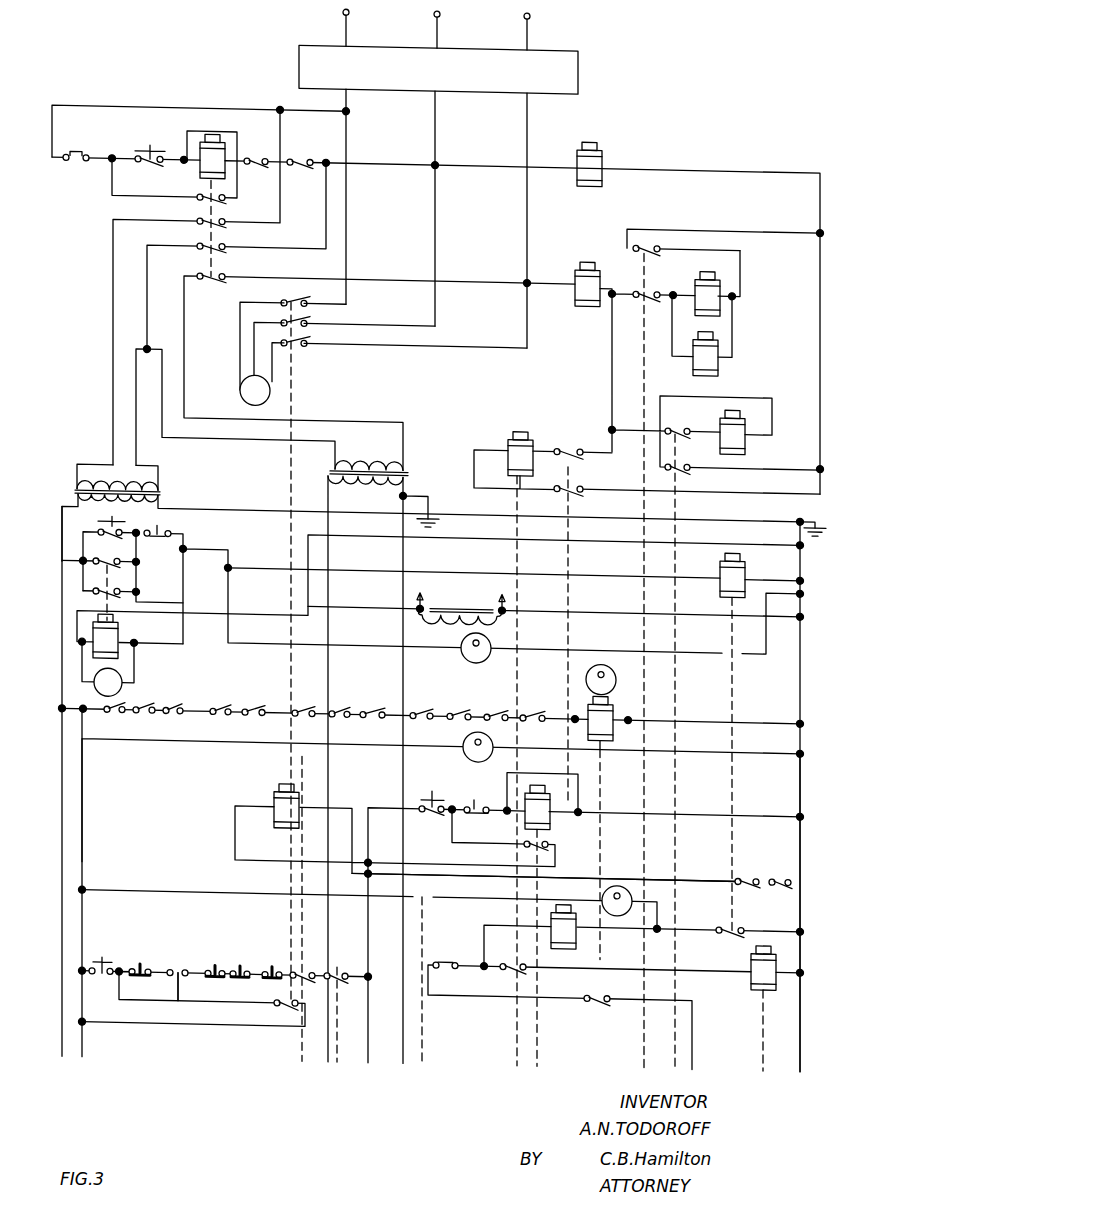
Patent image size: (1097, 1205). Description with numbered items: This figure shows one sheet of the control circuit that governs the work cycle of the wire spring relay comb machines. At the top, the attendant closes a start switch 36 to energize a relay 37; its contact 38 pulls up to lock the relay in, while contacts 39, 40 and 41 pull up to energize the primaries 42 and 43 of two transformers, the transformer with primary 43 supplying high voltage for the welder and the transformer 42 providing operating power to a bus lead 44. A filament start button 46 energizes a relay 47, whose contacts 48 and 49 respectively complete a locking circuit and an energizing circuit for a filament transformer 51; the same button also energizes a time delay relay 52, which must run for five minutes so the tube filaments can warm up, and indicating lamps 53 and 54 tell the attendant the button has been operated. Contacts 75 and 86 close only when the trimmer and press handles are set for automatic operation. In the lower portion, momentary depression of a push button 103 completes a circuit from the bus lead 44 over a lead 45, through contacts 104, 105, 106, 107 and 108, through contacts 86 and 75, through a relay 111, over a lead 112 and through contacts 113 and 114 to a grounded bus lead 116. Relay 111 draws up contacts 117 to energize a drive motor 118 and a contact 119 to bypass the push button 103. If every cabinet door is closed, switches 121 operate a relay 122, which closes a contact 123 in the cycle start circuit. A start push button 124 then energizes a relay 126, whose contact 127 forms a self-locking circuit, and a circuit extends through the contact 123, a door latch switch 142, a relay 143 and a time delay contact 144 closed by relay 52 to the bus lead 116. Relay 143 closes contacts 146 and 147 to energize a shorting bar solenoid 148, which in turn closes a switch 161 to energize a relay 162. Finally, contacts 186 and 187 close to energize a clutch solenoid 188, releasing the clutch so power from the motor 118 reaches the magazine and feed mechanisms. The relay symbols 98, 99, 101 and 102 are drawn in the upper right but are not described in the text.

The start switch 36 is at (152, 162).
The relay 37 is at (214, 150).
The relay contact 38 is at (224, 200).
The relay contact 39 is at (226, 225).
The relay contact 40 is at (226, 250).
The relay contact 41 is at (226, 280).
The transformer primary 42 is at (118, 480).
The transformer primary 43 is at (366, 456).
The bus lead 44 is at (62, 505).
The lead 45 is at (82, 822).
The filament start button 46 is at (125, 519).
The relay 47 is at (112, 650).
The contact 48 is at (120, 566).
The contact 49 is at (112, 582).
The filament transformer 51 is at (440, 610).
The time delay relay 52 is at (722, 556).
The indicating lamp 53 is at (118, 684).
The indicating lamp 54 is at (470, 650).
The contact 75 is at (337, 964).
The contact 86 is at (302, 964).
The switch 98 is at (646, 230).
The switch 99 is at (640, 278).
The relay 101 is at (700, 283).
The relay 102 is at (708, 350).
The push button 103 is at (100, 976).
The contact 104 is at (142, 960).
The contact 105 is at (178, 1000).
The contact 106 is at (215, 960).
The contact 107 is at (244, 975).
The contact 108 is at (270, 960).
The relay 111 is at (276, 800).
The lead 112 is at (690, 864).
The contact 113 is at (748, 862).
The contact 114 is at (778, 862).
The grounded bus lead 116 is at (800, 784).
The contacts 117 is at (312, 292).
The drive motor 118 is at (258, 385).
The contact 119 is at (274, 1002).
The switches 121 is at (248, 692).
The relay 122 is at (610, 718).
The contact 123 is at (598, 983).
The start push button 124 is at (434, 806).
The relay 126 is at (527, 806).
The contact 127 is at (524, 838).
The door latch switch 142 is at (445, 952).
The relay 143 is at (570, 930).
The time delay contact 144 is at (730, 912).
The contact 146 is at (568, 436).
The contact 147 is at (572, 474).
The shorting bar solenoid 148 is at (512, 440).
The switch 161 is at (510, 960).
The relay 162 is at (753, 952).
The contact 186 is at (678, 414).
The contact 187 is at (690, 460).
The clutch solenoid 188 is at (738, 420).